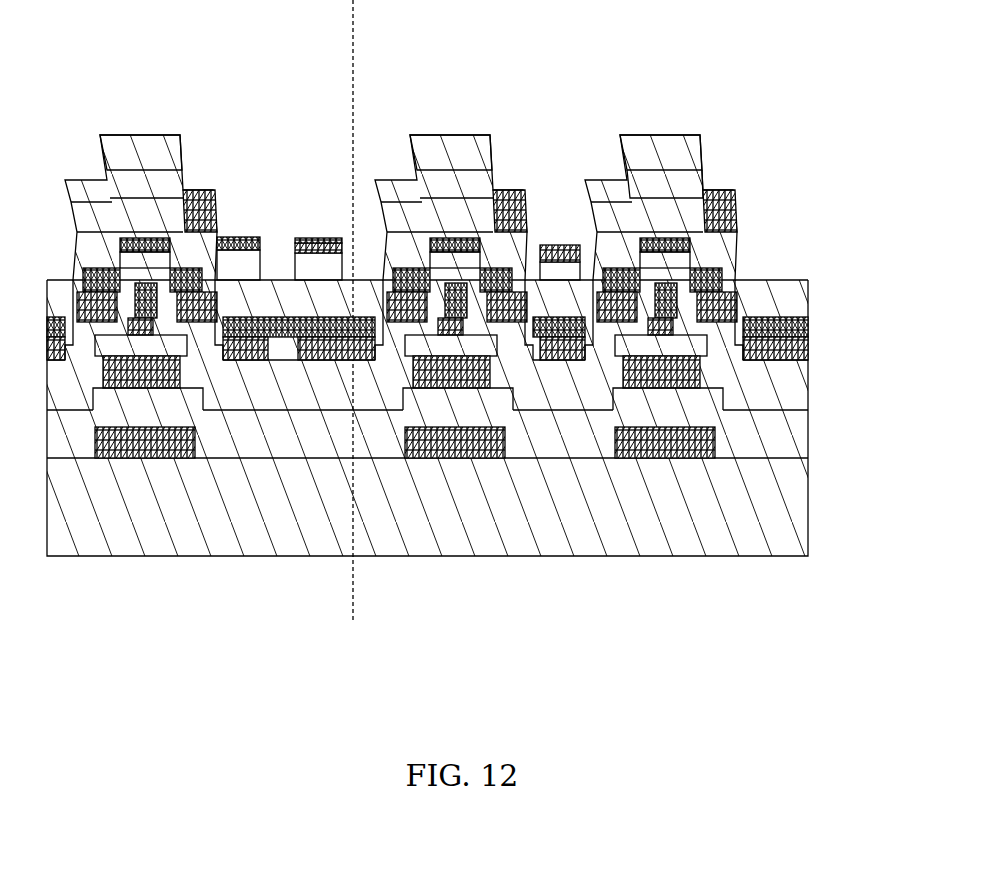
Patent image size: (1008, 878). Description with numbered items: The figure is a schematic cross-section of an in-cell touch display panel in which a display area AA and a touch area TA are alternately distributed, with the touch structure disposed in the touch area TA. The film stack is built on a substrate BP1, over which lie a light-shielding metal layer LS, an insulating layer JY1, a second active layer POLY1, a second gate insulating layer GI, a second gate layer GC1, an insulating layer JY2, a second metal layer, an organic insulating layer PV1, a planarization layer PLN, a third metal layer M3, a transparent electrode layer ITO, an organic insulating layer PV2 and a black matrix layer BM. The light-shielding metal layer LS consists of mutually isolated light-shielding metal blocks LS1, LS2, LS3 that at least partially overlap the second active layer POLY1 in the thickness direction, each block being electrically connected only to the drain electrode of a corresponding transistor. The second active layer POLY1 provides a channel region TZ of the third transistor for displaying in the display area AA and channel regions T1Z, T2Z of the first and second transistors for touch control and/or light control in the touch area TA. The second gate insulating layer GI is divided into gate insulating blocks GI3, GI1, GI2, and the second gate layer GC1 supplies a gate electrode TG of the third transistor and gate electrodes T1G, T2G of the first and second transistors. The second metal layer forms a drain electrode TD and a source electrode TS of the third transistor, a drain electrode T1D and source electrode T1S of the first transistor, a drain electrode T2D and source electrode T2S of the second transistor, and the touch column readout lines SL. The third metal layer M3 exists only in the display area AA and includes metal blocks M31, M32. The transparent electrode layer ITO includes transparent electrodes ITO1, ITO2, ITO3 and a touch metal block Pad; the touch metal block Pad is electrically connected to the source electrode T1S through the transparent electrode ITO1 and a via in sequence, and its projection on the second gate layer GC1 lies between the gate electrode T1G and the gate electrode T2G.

The display area AA is at (78, 43).
The touch area TA is at (355, 33).
The substrate BP1 is at (792, 527).
The insulating layer JY1 is at (792, 440).
The insulating layer JY2 is at (792, 392).
The planarization layer PLN is at (805, 300).
The organic insulating layer PV1 is at (805, 338).
The organic insulating layer PV2 is at (753, 184).
The black matrix layer BM is at (747, 152).
The touch column readout lines SL is at (762, 345).
The third metal layer M3 is at (253, 107).
The metal block M31 is at (320, 248).
The metal block M32 is at (240, 243).
The transparent electrode layer ITO is at (612, 100).
The transparent electrode ITO1 is at (513, 165).
The transparent electrode ITO2 is at (302, 240).
The transparent electrode ITO3 is at (205, 173).
The touch metal block Pad is at (552, 258).
The light-shielding metal block LS1 is at (131, 539).
The light-shielding metal block LS2 is at (439, 509).
The light-shielding metal block LS3 is at (651, 509).
The light-shielding metal layer LS is at (842, 678).
The drain electrode of the third transistor TD is at (99, 448).
The source electrode of the third transistor TS is at (186, 448).
The gate electrode of the third transistor TG is at (142, 503).
The channel region of the third transistor TZ is at (141, 521).
The gate insulating block GI3 is at (141, 510).
The drain electrode of the first transistor T1D is at (415, 448).
The source electrode of the first transistor T1S is at (496, 448).
The gate electrode of the first transistor T1G is at (453, 503).
The channel region of the first transistor T1Z is at (451, 521).
The gate insulating block GI1 is at (451, 510).
The drain electrode of the second transistor T2D is at (627, 448).
The source electrode of the second transistor T2S is at (708, 448).
The gate electrode of the second transistor T2G is at (666, 503).
The channel region of the second transistor T2Z is at (662, 521).
The gate insulating block GI2 is at (661, 510).
The second active layer POLY1 is at (380, 665).
The second gate insulating layer GI is at (605, 632).
The second gate layer GC1 is at (835, 588).